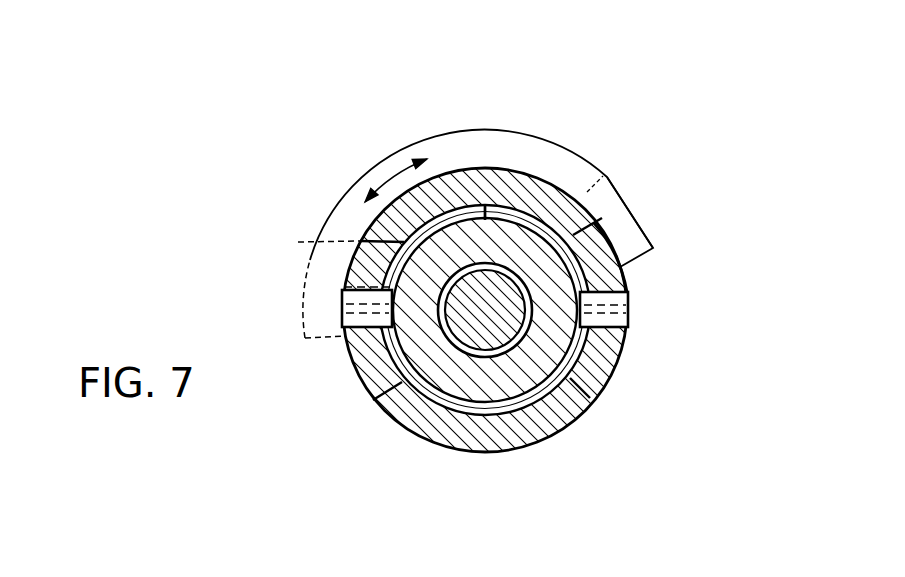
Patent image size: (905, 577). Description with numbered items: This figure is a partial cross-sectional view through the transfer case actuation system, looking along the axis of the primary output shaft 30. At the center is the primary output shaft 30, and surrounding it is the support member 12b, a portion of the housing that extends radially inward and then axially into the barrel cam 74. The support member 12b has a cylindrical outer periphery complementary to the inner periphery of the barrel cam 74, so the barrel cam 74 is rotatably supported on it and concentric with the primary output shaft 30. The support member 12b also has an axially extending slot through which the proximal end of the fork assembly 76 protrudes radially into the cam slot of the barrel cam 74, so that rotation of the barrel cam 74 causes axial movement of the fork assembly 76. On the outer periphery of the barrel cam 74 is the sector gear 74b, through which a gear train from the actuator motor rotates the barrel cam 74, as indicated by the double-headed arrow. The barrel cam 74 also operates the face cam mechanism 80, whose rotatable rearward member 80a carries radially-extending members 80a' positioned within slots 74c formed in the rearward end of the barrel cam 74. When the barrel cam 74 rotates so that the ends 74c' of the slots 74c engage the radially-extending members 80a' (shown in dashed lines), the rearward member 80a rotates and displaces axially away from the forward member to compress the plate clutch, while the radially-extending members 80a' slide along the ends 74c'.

The support member 12b is at (548, 210).
The primary output shaft 30 is at (462, 270).
The barrel cam 74 is at (572, 200).
The sector gear 74b is at (640, 210).
The slots 74c is at (668, 255).
The ends of the slots 74c' is at (656, 289).
The fork assembly 76 is at (485, 212).
The face cam mechanism 80 is at (347, 263).
The rearward member 80a is at (367, 308).
The radially-extending members 80a' is at (672, 317).